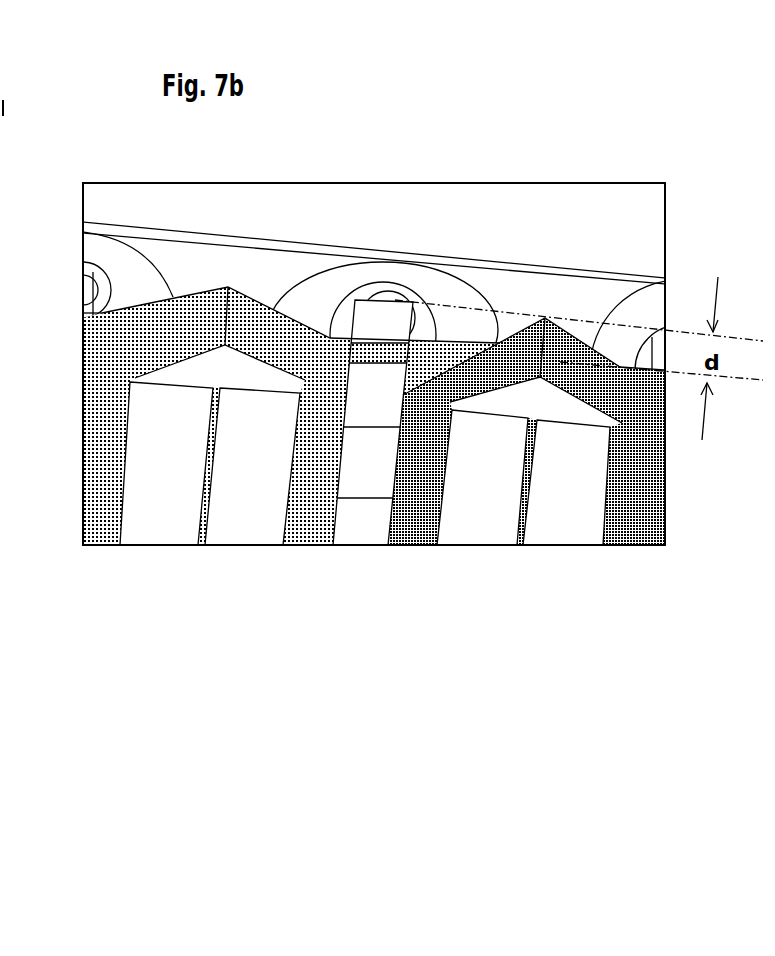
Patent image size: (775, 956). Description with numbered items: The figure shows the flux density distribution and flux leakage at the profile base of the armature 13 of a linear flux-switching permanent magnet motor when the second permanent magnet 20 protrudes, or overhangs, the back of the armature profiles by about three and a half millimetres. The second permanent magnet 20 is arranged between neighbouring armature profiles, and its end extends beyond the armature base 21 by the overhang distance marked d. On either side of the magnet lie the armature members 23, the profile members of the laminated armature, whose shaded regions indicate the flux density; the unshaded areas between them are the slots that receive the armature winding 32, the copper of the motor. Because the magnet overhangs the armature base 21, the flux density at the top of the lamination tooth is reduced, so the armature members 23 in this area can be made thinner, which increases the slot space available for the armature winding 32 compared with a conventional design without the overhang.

The armature 13 is at (463, 277).
The second permanent magnet 20 is at (373, 320).
The armature base 21 is at (218, 373).
The armature member 23 is at (93, 495).
The armature winding 32 is at (178, 465).